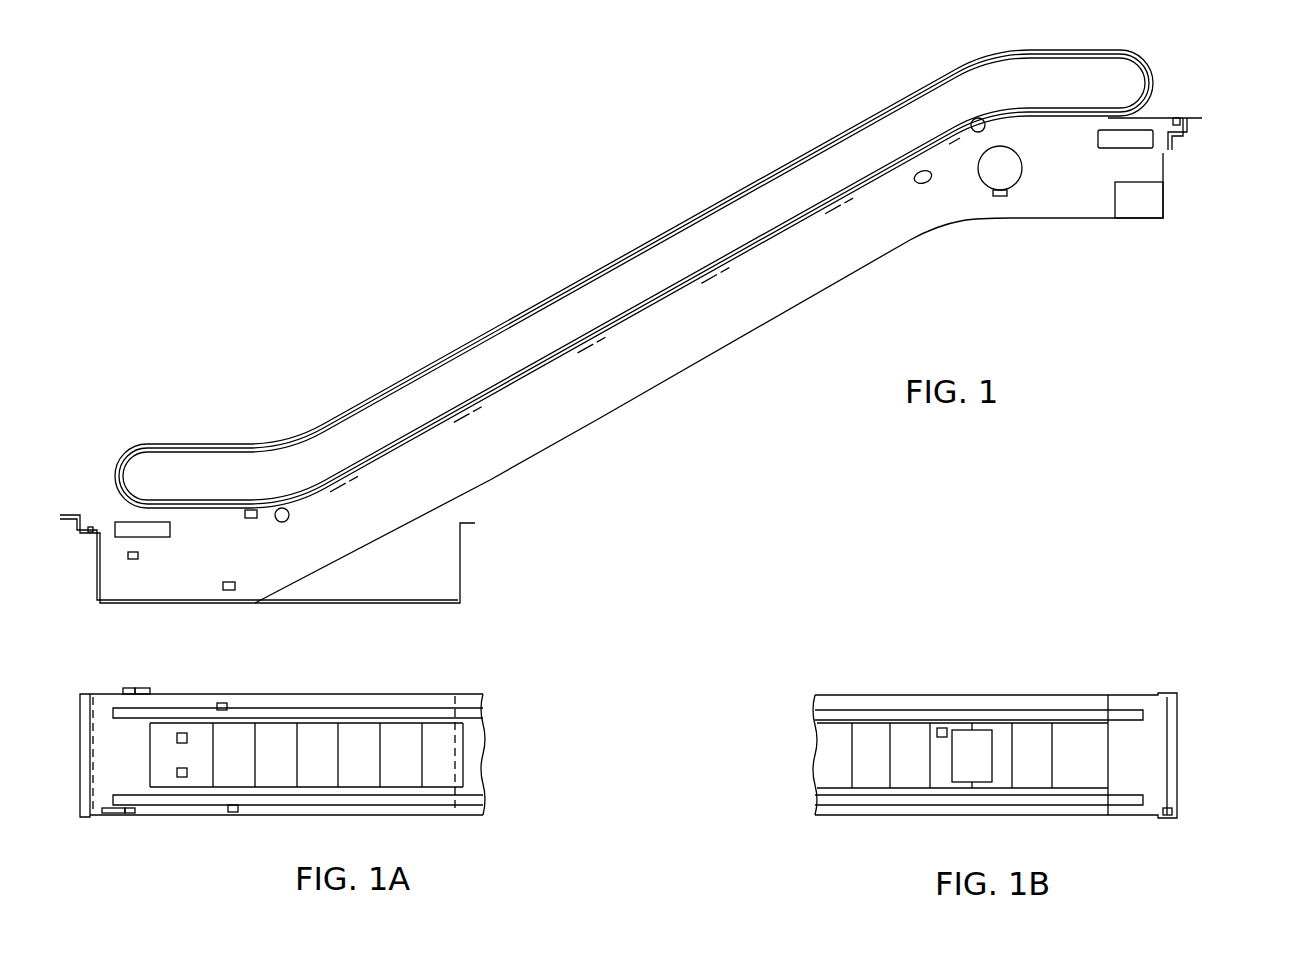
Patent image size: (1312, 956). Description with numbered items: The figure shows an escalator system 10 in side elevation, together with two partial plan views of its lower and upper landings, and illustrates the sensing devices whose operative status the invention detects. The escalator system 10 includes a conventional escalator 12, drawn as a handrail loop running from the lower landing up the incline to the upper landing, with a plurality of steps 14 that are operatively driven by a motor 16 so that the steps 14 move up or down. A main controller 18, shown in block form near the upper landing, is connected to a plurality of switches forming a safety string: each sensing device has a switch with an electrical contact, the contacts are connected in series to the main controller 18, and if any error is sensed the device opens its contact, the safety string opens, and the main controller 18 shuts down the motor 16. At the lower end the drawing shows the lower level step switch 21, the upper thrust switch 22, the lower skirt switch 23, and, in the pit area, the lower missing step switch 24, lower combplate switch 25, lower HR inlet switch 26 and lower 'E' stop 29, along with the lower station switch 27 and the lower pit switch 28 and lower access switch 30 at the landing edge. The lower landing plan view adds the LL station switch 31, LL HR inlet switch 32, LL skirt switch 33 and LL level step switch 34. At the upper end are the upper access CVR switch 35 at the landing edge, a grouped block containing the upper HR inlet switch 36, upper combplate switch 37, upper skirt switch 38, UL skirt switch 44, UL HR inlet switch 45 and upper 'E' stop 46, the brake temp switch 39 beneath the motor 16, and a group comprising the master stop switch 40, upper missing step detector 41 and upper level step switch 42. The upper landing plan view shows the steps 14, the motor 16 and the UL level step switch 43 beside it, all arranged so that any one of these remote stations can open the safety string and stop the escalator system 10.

In FIG. 1, the escalator system 10 is at (1230, 127).
In FIG. 1, the escalator 12 is at (1100, 47).
In FIG. 1A, the steps 14 is at (400, 738).
In FIG. 1B, the steps 14 is at (870, 748).
In FIG. 1, the motor 16 is at (1014, 183).
In FIG. 1B, the motor 16 is at (985, 745).
In FIG. 1, the main controller 18 is at (1125, 200).
In FIG. 1, the lower level step switch 21 is at (237, 585).
In FIG. 1A, the lower level step switch 21 is at (190, 777).
In FIG. 1, the upper thrust switch 22 is at (265, 544).
In FIG. 1, the lower skirt switch 23 is at (250, 508).
In FIG. 1A, the lower skirt switch 23 is at (234, 812).
In FIG. 1, the lower missing step switch 24 is at (105, 584).
In FIG. 1A, the lower missing step switch 24 is at (86, 852).
In FIG. 1, the lower combplate switch 25 is at (105, 584).
In FIG. 1A, the lower combplate switch 25 is at (86, 852).
In FIG. 1, the lower HR inlet switch 26 is at (105, 584).
In FIG. 1A, the lower HR inlet switch 26 is at (86, 852).
In FIG. 1, the lower station switch 27 is at (133, 559).
In FIG. 1A, the lower station switch 27 is at (130, 815).
In FIG. 1, the lower pit switch 28 is at (57, 477).
In FIG. 1, the lower 'E' stop 29 is at (122, 532).
In FIG. 1A, the lower 'E' stop 29 is at (110, 815).
In FIG. 1, the lower access switch 30 is at (65, 512).
In FIG. 1A, the LL station switch 31 is at (143, 688).
In FIG. 1A, the LL HR inlet switch 32 is at (128, 687).
In FIG. 1A, the LL skirt switch 33 is at (226, 703).
In FIG. 1A, the LL level step switch 34 is at (185, 733).
In FIG. 1, the upper access CVR switch 35 is at (1178, 117).
In FIG. 1B, the upper access CVR switch 35 is at (1165, 815).
In FIG. 1, the upper HR inlet switch 36 is at (1172, 213).
In FIG. 1, the upper combplate switch 37 is at (1172, 213).
In FIG. 1, the upper skirt switch 38 is at (1172, 213).
In FIG. 1, the brake temp switch 39 is at (999, 197).
In FIG. 1, the master stop switch 40 is at (925, 254).
In FIG. 1, the upper missing step detector 41 is at (925, 254).
In FIG. 1, the upper level step switch 42 is at (921, 184).
In FIG. 1B, the UL level step switch 43 is at (942, 728).
In FIG. 1, the UL skirt switch 44 is at (1172, 213).
In FIG. 1, the UL HR inlet switch 45 is at (1172, 213).
In FIG. 1, the upper 'E' stop 46 is at (1147, 142).